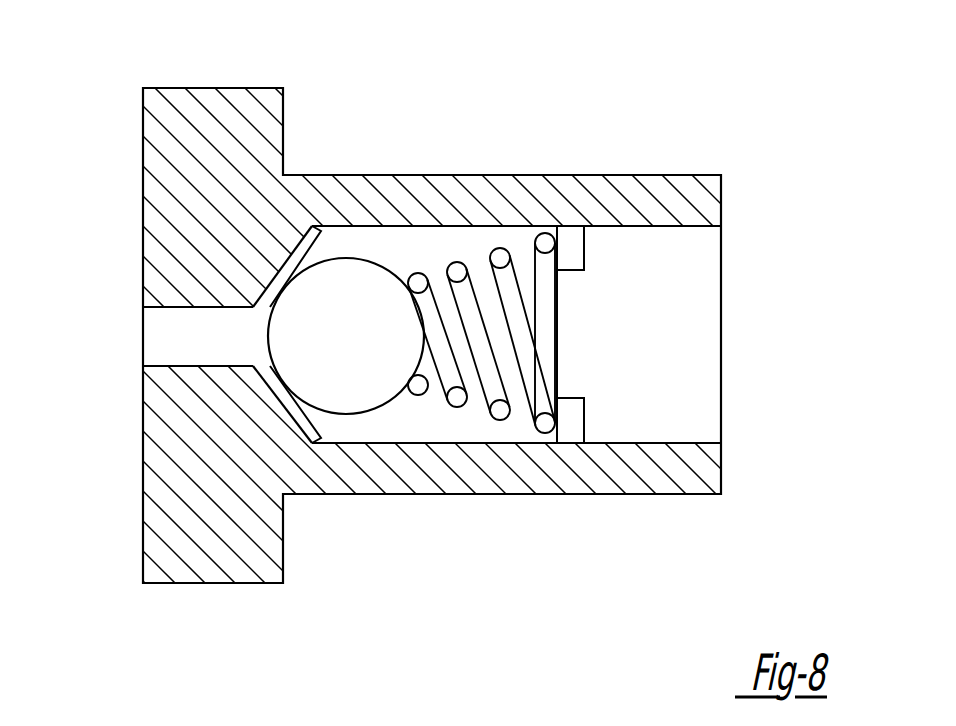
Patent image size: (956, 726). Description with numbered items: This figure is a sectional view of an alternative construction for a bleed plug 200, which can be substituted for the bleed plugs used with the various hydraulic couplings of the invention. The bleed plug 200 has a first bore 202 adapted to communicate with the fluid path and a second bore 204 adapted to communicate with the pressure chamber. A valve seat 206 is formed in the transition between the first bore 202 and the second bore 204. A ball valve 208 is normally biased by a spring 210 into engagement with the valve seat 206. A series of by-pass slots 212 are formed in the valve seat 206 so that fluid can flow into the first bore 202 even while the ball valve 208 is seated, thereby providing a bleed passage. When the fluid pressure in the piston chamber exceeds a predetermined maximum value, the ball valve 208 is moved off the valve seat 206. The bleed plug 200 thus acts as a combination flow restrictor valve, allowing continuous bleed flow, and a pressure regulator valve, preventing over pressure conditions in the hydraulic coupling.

The bleed plug 200 is at (604, 140).
The first bore 202 is at (660, 226).
The second bore 204 is at (180, 320).
The valve seat 206 is at (317, 232).
The ball valve 208 is at (370, 343).
The spring 210 is at (495, 250).
The by-pass slots 212 is at (295, 418).